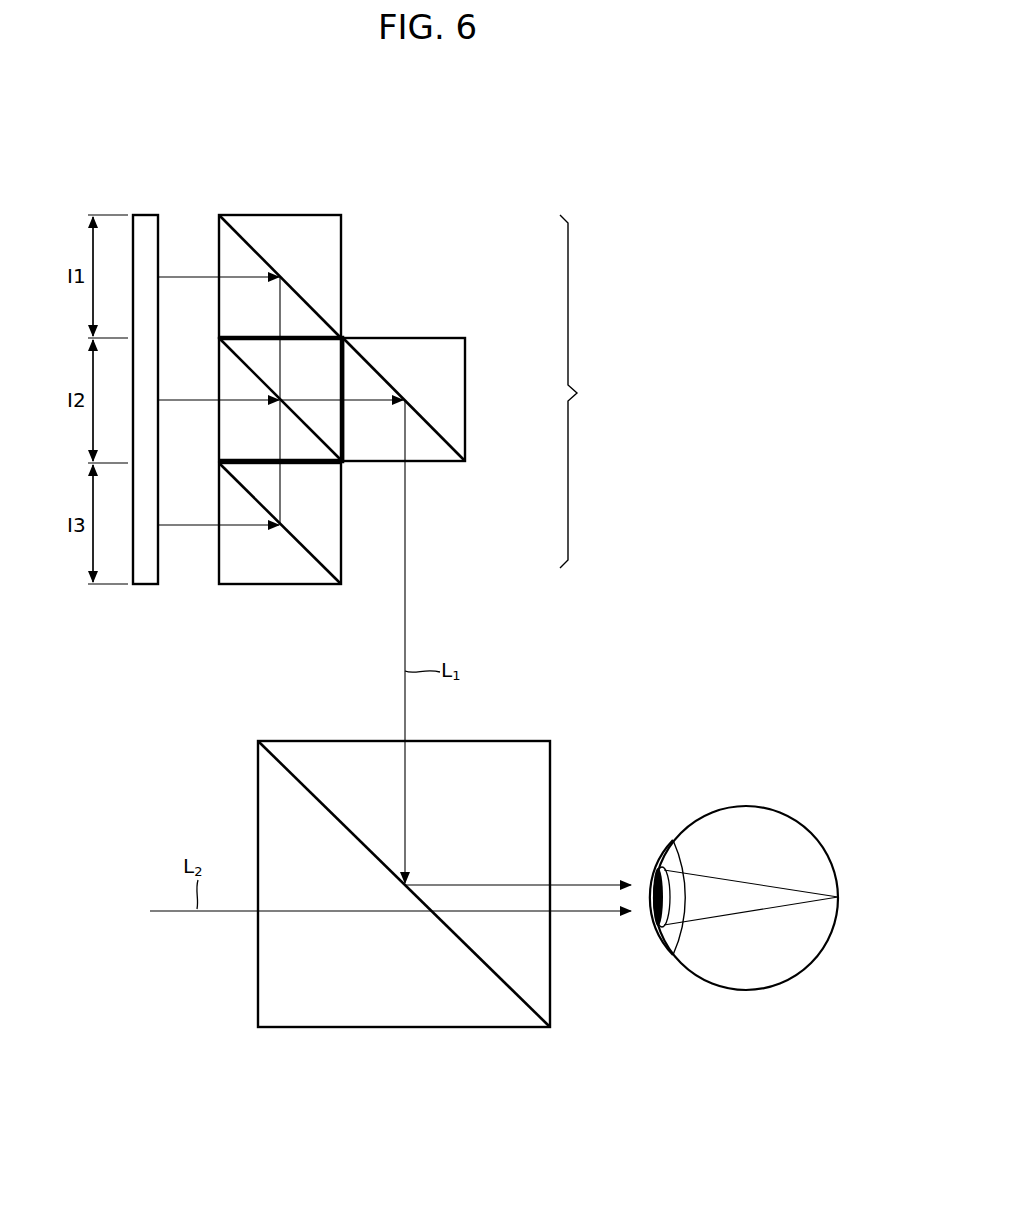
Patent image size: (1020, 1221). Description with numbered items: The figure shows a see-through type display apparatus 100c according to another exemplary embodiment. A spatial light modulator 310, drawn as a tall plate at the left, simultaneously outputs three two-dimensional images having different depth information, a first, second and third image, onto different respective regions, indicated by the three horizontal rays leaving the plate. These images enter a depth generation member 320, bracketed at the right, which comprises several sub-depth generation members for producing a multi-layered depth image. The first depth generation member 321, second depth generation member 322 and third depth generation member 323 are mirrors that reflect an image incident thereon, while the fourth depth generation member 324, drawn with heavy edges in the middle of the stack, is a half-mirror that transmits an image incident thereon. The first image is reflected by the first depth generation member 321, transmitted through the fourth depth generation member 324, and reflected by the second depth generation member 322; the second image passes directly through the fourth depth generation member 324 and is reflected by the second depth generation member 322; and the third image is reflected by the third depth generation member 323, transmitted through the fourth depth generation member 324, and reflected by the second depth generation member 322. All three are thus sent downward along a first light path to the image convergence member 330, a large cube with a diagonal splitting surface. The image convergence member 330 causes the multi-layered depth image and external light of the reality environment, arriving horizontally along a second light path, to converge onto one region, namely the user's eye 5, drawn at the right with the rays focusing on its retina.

The spatial light modulator 310 is at (145, 215).
The depth generation member 320 is at (422, 426).
The first depth generation member 321 is at (341, 231).
The second depth generation member 322 is at (465, 399).
The third depth generation member 323 is at (274, 578).
The fourth depth generation member 324 is at (344, 355).
The image convergence member 330 is at (391, 1019).
The eye 5 is at (746, 808).
The see-through type display apparatus 100c is at (664, 165).